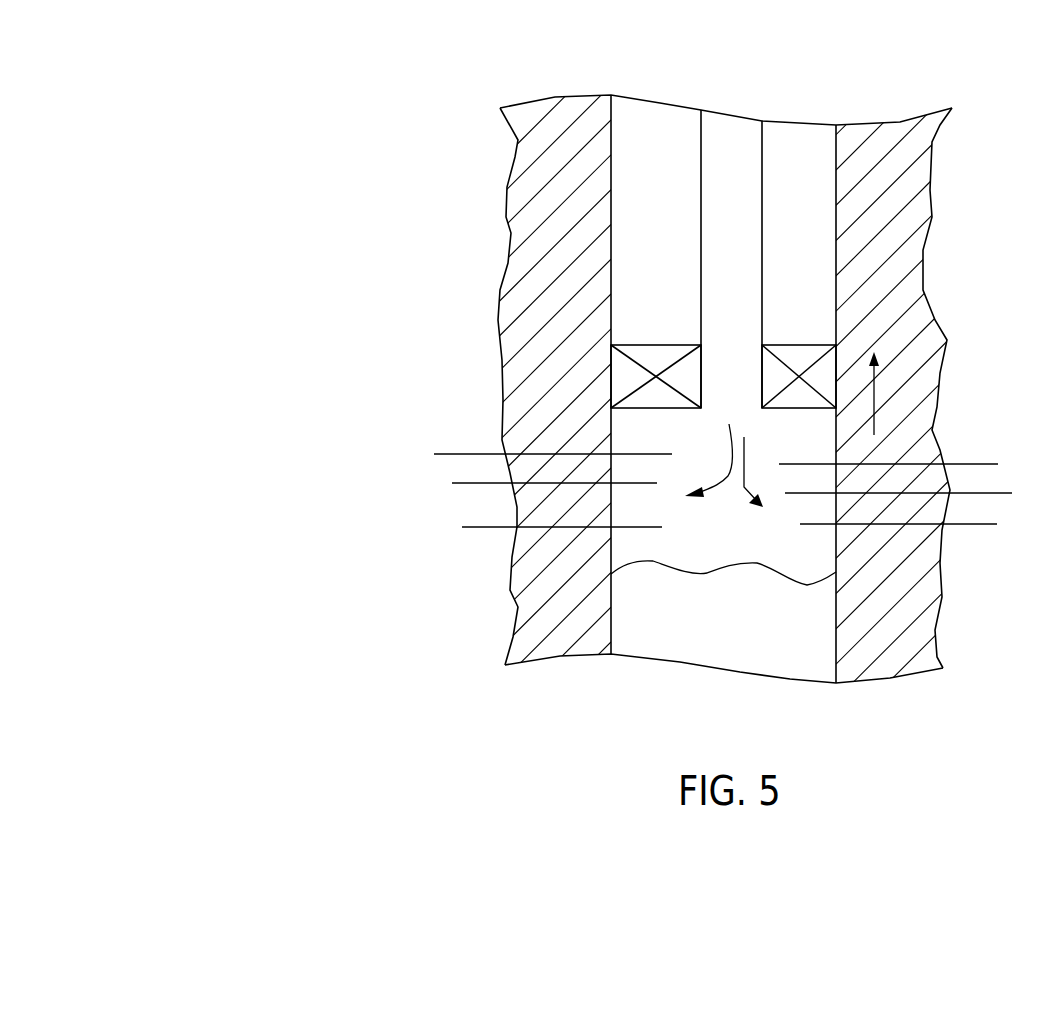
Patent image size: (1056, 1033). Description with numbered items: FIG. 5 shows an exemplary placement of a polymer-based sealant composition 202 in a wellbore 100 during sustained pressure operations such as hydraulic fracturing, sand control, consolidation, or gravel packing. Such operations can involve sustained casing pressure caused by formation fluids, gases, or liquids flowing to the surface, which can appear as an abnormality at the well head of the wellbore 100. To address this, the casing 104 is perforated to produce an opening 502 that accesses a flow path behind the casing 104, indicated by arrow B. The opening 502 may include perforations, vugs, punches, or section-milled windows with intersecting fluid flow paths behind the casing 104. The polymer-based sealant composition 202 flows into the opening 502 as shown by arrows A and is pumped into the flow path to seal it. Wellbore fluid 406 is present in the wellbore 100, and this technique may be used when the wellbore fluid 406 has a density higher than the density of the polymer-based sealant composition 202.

The wellbore 100 is at (243, 91).
The casing 104 is at (611, 563).
The polymer-based sealant composition 202 is at (795, 443).
The wellbore fluid 406 is at (793, 603).
The opening 502 is at (412, 423).